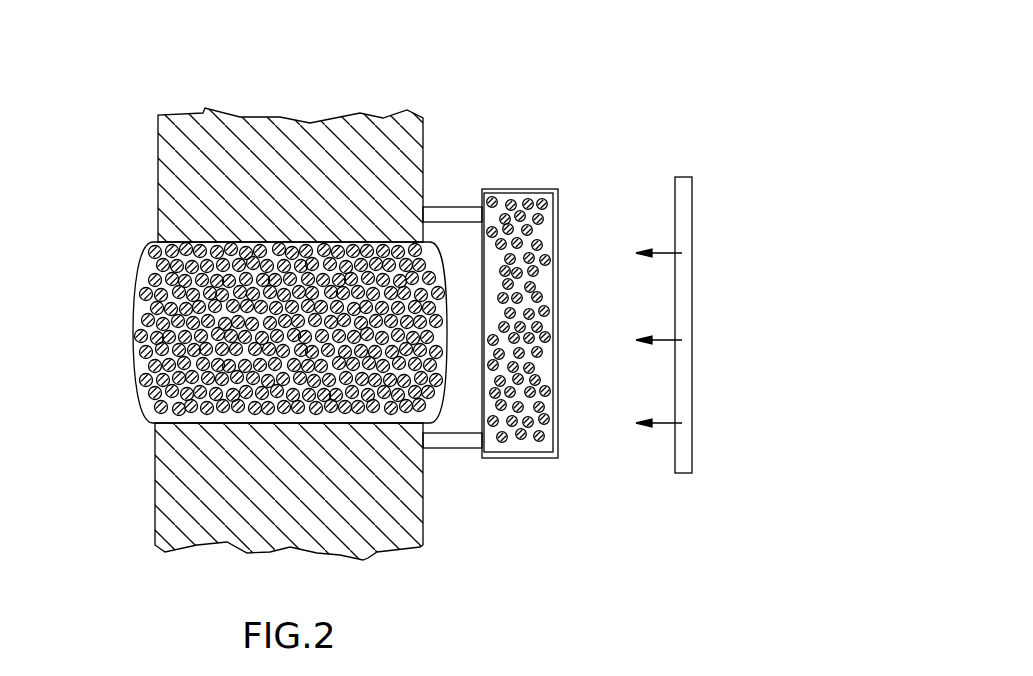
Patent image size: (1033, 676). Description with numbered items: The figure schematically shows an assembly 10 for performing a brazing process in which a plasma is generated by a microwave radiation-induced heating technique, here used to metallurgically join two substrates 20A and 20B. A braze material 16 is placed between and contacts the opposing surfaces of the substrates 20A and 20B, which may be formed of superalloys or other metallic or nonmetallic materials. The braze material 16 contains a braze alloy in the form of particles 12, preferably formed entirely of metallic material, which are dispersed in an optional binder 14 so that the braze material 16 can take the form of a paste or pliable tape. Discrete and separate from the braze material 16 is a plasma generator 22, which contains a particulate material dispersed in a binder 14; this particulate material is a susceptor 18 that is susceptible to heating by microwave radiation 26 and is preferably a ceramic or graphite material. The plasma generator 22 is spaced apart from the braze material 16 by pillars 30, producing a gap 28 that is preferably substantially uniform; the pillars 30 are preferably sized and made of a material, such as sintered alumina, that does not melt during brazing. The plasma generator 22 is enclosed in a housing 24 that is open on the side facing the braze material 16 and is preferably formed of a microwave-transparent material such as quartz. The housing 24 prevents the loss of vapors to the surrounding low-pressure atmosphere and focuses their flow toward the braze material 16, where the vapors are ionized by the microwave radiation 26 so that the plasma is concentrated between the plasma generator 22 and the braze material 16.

The assembly 10 is at (642, 145).
The particles 12 is at (153, 392).
The binder 14 is at (377, 247).
The braze material 16 is at (116, 268).
The susceptor 18 is at (503, 443).
The substrate 20A is at (160, 158).
The substrate 20B is at (160, 488).
The plasma generator 22 is at (555, 247).
The housing 24 is at (530, 188).
The microwave radiation 26 is at (682, 475).
The gap 28 is at (461, 412).
The pillars 30 is at (462, 210).